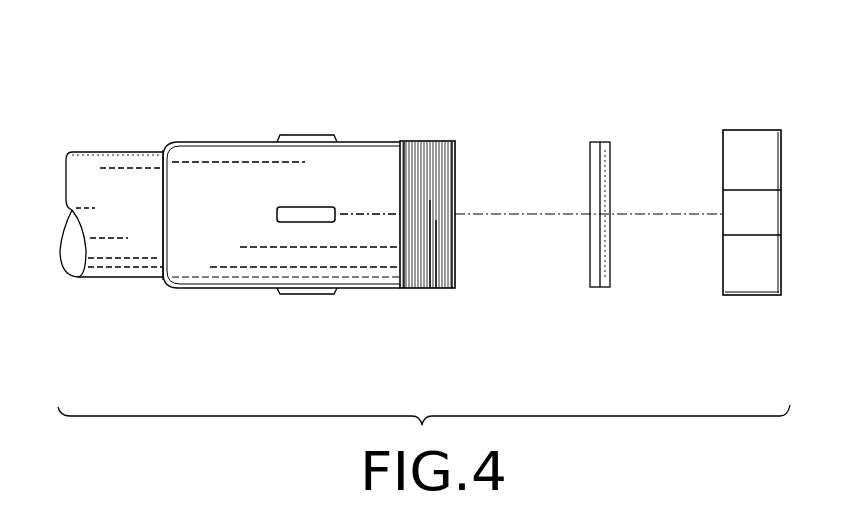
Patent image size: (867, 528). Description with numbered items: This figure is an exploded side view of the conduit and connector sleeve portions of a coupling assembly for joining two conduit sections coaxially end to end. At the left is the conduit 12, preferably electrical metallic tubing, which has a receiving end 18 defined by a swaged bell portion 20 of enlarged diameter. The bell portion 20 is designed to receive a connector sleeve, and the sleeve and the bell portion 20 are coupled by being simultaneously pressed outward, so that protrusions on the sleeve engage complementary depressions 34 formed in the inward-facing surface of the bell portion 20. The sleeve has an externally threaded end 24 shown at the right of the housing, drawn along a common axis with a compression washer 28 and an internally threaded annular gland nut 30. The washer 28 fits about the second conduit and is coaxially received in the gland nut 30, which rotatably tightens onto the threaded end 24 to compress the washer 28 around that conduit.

The conduit 12 is at (110, 150).
The receiving end 18 is at (366, 290).
The bell portion 20 is at (367, 140).
The externally threaded end 24 is at (430, 140).
The compression washer 28 is at (603, 140).
The gland nut 30 is at (724, 277).
The depressions 34 is at (286, 136).